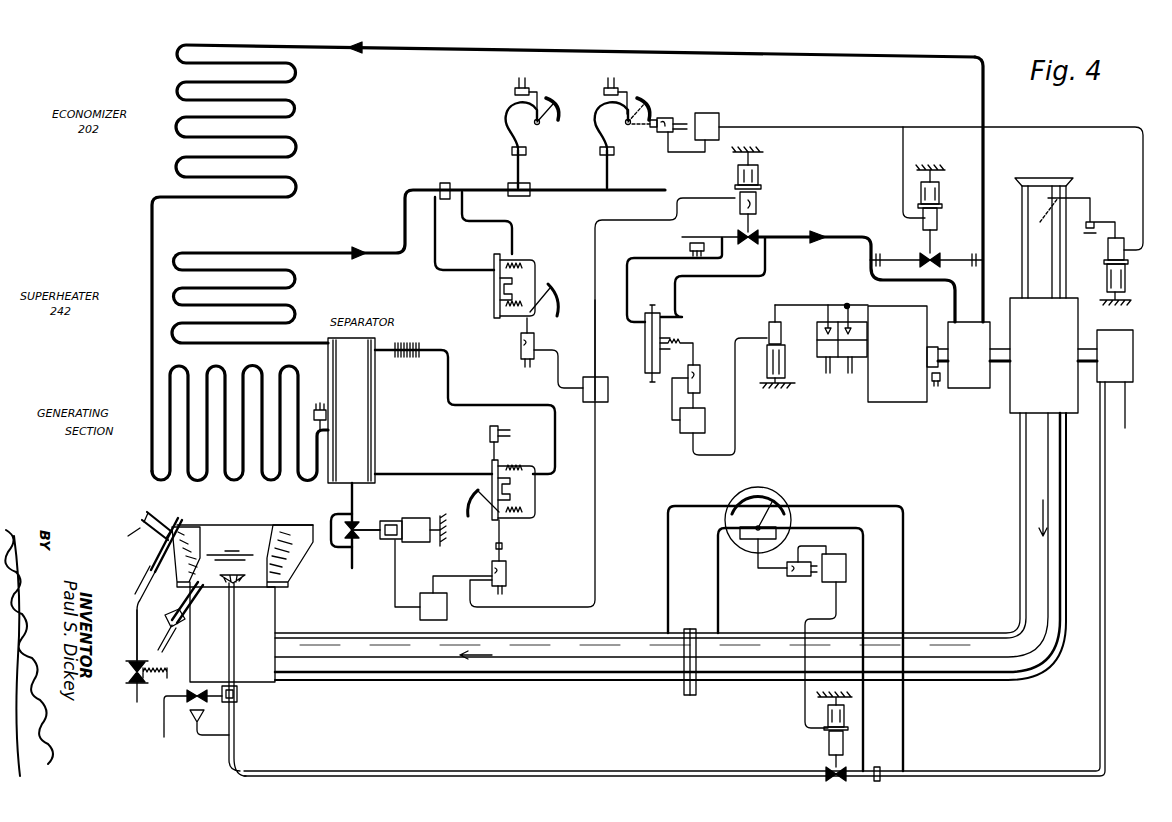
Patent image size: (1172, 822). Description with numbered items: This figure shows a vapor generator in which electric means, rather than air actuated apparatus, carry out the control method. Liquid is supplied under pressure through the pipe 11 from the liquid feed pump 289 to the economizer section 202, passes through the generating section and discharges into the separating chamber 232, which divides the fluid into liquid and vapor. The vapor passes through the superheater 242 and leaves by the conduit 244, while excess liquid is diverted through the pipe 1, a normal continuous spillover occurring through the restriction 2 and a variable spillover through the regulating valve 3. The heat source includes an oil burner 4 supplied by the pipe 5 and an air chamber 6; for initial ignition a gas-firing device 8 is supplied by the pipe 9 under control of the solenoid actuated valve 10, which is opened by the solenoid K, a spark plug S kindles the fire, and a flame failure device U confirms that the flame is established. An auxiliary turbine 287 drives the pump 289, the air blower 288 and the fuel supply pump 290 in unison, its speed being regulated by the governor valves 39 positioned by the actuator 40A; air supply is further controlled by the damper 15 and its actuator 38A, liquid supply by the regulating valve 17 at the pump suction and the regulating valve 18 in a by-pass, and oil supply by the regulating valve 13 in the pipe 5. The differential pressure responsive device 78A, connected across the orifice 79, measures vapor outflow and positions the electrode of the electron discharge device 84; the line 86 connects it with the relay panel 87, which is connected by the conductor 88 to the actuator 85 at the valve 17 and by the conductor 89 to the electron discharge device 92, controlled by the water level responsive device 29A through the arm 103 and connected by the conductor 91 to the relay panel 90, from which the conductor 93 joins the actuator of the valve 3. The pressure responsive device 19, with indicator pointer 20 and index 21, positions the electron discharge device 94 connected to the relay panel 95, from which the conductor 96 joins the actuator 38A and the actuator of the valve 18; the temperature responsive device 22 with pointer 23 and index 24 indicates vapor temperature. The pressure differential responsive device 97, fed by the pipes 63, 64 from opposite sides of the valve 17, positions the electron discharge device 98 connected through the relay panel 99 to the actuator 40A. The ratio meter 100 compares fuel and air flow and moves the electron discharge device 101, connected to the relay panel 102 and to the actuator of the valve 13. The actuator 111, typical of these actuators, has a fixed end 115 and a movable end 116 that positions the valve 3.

The economizer section 202 is at (563, 256).
The pipe 11 is at (430, 48).
The superheater 242 is at (418, 266).
The conduit 244 is at (298, 252).
The separating chamber 232 is at (376, 388).
The pipe 1 is at (344, 563).
The restriction 2 is at (332, 548).
The regulating valve 3 is at (358, 538).
The end 116 is at (372, 524).
The actuator 111 is at (410, 518).
The end 115 is at (440, 514).
The conductor 93 is at (395, 575).
The relay panel 90 is at (420, 620).
The conductor 91 is at (462, 576).
The electron discharge device 92 is at (506, 574).
The arm 103 is at (503, 548).
The conductor 89 is at (595, 558).
The conductor 88 is at (595, 285).
The water level responsive device 29A is at (536, 500).
The orifice 79 is at (445, 183).
The differential pressure responsive device 78A is at (535, 262).
The electron discharge device 84 is at (520, 350).
The line 86 is at (558, 362).
The relay panel 87 is at (608, 392).
The temperature responsive device 22 is at (505, 125).
The indicator pointer 23 is at (545, 120).
The index 24 is at (556, 98).
The pressure responsive device 19 is at (594, 130).
The indicator pointer 20 is at (634, 128).
The index 21 is at (645, 96).
The electron discharge device 94 is at (668, 118).
The relay panel 95 is at (706, 113).
The conductor 96 is at (866, 128).
The actuator 85 is at (758, 172).
The regulating valve 17 is at (752, 244).
The pipe 63 is at (628, 275).
The pipe 64 is at (676, 293).
The pressure differential responsive device 97 is at (661, 330).
The electron discharge device 98 is at (700, 375).
The relay panel 99 is at (705, 414).
The actuator 40A is at (785, 370).
The governor valves 39 is at (825, 305).
The auxiliary turbine 287 is at (876, 402).
The liquid feed pump 289 is at (958, 388).
The air blower 288 is at (1008, 412).
The fuel supply pump 290 is at (1106, 330).
The damper 15 is at (1038, 210).
The actuator 38A is at (1104, 270).
The regulating valve 18 is at (936, 266).
The regulating valve 13 is at (830, 784).
The pipe 5 is at (336, 770).
The ratio meter 100 is at (796, 490).
The electron discharge device 101 is at (800, 577).
The relay panel 102 is at (846, 578).
The air chamber 6 is at (276, 602).
The oil burner 4 is at (236, 616).
The gas-firing device 8 is at (150, 555).
The spark plug S is at (134, 525).
The pipe 9 is at (134, 630).
The solenoid actuated valve 10 is at (126, 672).
The solenoid K is at (155, 681).
The flame failure device U is at (180, 617).